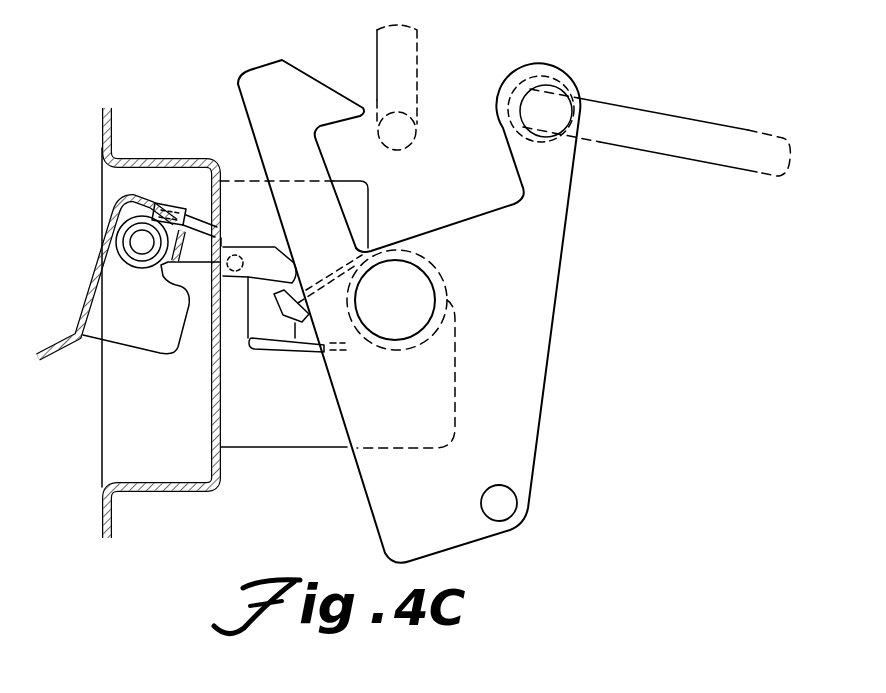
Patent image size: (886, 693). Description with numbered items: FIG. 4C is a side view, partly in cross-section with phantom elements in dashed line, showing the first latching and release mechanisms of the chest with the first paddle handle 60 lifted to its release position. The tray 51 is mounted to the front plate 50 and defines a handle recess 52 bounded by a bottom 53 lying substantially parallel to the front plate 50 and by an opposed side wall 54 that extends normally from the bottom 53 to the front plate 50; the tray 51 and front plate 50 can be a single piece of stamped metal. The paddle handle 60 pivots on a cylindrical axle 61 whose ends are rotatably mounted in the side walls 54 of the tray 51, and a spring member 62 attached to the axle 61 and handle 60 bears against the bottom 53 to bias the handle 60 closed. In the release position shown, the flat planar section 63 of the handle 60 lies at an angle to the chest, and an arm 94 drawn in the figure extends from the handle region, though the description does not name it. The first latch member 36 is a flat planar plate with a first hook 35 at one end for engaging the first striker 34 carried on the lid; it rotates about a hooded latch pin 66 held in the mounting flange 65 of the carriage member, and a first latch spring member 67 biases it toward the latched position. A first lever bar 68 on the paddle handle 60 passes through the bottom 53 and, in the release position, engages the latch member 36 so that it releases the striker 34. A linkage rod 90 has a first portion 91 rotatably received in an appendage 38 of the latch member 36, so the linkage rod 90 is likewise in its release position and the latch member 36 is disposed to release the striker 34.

The first striker 34 is at (421, 68).
The first hook 35 is at (292, 92).
The first latch member 36 is at (540, 320).
The appendage 38 is at (557, 178).
The front plate 50 is at (112, 118).
The tray 51 is at (223, 393).
The handle recess 52 is at (140, 452).
The bottom 53 is at (213, 440).
The side wall 54 is at (173, 433).
The first paddle handle 60 is at (128, 328).
The cylindrical axle 61 is at (141, 240).
The spring member 62 is at (192, 212).
The flat planar section 63 is at (100, 260).
The mounting flange 65 is at (354, 200).
The hooded latch pin 66 is at (413, 303).
The first latch spring member 67 is at (303, 354).
The first lever bar 68 is at (217, 238).
The linkage rod 90 is at (623, 104).
The first portion 91 is at (545, 110).
The lever arm 94 is at (67, 303).